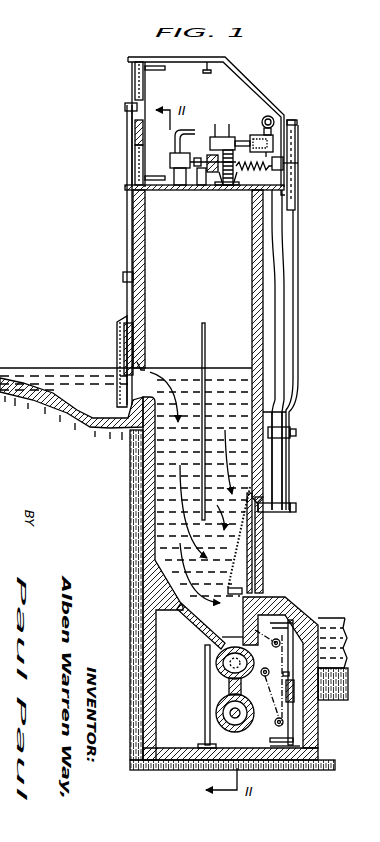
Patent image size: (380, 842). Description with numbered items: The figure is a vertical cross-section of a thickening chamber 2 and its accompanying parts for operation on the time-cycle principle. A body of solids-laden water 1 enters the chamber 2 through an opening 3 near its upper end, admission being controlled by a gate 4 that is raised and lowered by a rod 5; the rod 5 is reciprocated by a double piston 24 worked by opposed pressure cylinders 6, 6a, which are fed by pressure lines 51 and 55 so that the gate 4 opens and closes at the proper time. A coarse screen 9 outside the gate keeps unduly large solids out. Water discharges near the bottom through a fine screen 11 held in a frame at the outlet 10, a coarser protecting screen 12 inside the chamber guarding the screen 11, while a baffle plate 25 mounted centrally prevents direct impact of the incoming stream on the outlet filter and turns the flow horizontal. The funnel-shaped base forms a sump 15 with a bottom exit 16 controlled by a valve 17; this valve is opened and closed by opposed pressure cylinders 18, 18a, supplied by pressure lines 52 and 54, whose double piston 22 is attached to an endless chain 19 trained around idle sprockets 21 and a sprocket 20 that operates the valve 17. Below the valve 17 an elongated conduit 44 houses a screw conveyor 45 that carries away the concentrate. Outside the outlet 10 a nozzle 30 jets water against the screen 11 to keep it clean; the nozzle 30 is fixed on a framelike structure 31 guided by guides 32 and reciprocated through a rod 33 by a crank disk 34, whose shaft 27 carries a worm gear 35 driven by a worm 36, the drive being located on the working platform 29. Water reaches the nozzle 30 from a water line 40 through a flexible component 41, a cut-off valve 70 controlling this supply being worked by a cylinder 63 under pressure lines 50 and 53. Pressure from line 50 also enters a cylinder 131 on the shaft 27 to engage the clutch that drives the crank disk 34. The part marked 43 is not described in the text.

The body of solids-laden water 1 is at (14, 368).
The thickening chamber 2 is at (225, 475).
The opening 3 is at (148, 374).
The gate 4 is at (124, 350).
The rod 5 is at (127, 258).
The pressure cylinder 6 is at (135, 170).
The pressure cylinder 6a is at (135, 88).
The coarse screen 9 is at (120, 318).
The outlet 10 is at (263, 528).
The screen 11 is at (252, 550).
The protecting screen 12 is at (233, 568).
The sump 15 is at (205, 613).
The exit 16 is at (205, 645).
The valve 17 is at (216, 664).
The pressure cylinder 18 is at (293, 727).
The pressure cylinder 18a is at (322, 652).
The endless chain 19 is at (275, 724).
The sprocket 20 is at (229, 686).
The idle sprockets 21 is at (262, 686).
The double piston 22 is at (294, 698).
The double piston 24 is at (135, 135).
The baffle plate 25 is at (206, 348).
The shaft 27 is at (298, 163).
The working platform 29 is at (181, 190).
The nozzle 30 is at (283, 506).
The framelike structure 31 is at (277, 468).
The guides 32 is at (291, 434).
The rod 33 is at (298, 386).
The crank disk 34 is at (295, 207).
The worm gear 35 is at (230, 190).
The worm 36 is at (216, 190).
The water line 40 is at (272, 116).
The flexible or extensible component 41 is at (284, 288).
The part 43 is at (373, 717).
The elongated conduit 44 is at (228, 711).
The screw conveyor 45 is at (228, 717).
The pressure line 50 is at (192, 130).
The pressure line 51 is at (167, 176).
The pressure line 52 is at (300, 746).
The pressure line 53 is at (230, 124).
The pressure line 54 is at (292, 606).
The pressure line 55 is at (164, 72).
The cylinder 63 is at (214, 124).
The cut-off valve 70 is at (258, 135).
The cylinder 131 is at (187, 161).